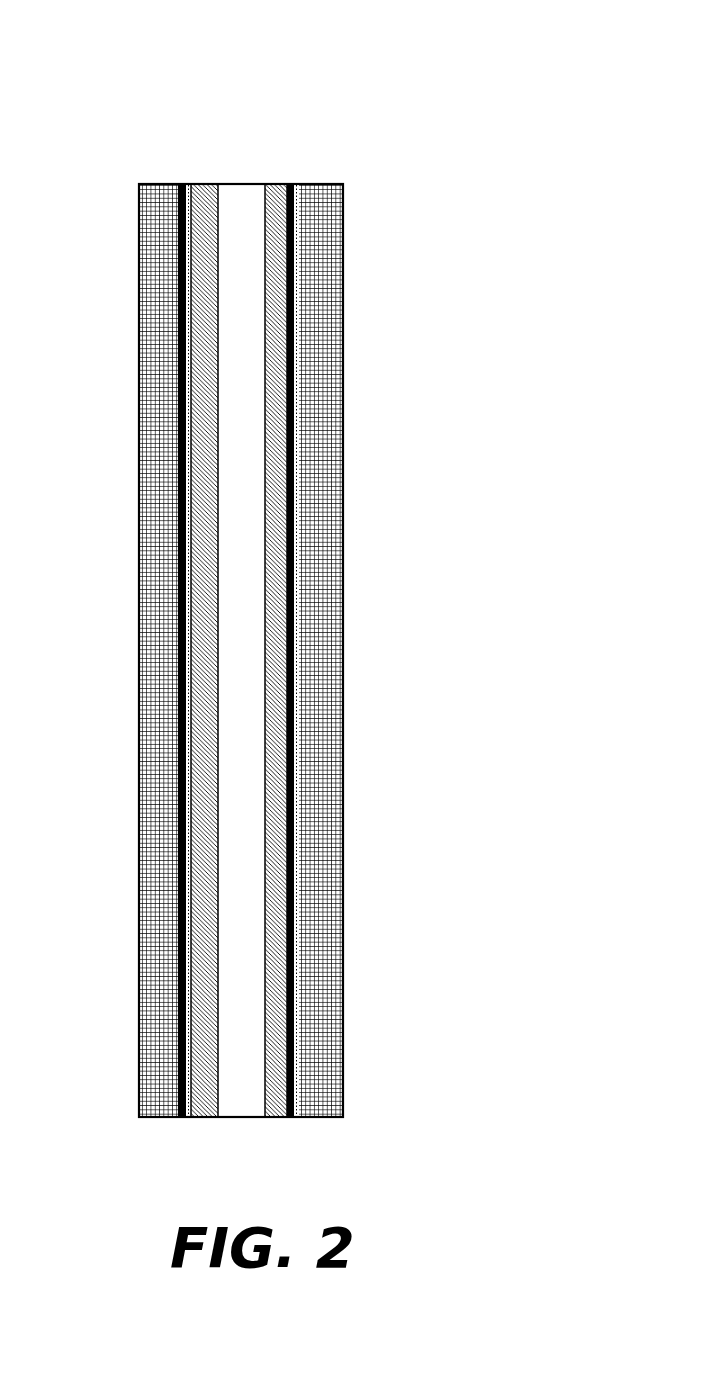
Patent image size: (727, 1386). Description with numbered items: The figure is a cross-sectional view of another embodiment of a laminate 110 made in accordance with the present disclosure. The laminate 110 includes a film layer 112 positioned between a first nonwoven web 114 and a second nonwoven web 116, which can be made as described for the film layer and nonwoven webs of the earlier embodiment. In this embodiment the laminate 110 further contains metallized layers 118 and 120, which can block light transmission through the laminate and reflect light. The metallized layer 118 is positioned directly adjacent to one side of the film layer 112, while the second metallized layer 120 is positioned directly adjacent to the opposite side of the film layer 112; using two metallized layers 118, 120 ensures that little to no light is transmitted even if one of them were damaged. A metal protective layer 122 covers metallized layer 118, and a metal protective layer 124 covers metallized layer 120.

The laminate 110 is at (102, 53).
The film layer 112 is at (242, 197).
The first nonwoven web 114 is at (158, 185).
The second nonwoven web 116 is at (325, 225).
The metallized layer 118 is at (206, 185).
The second metallized layer 120 is at (272, 185).
The metal protective layer 122 is at (187, 185).
The metal protective layer 124 is at (297, 185).